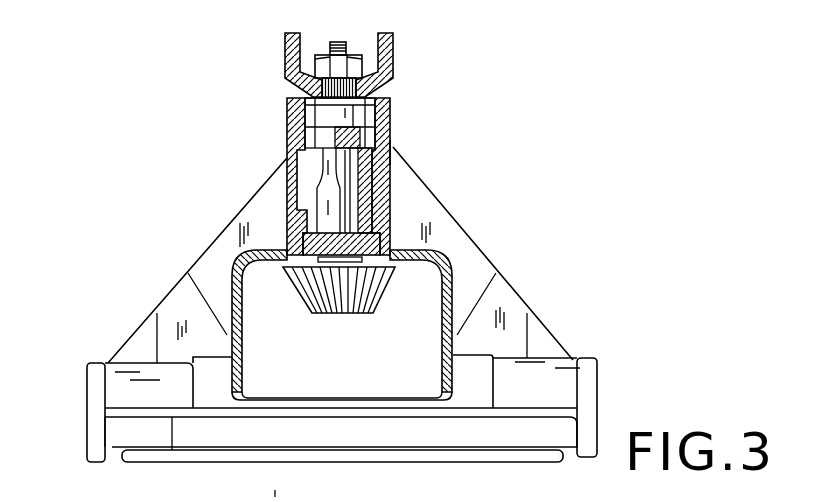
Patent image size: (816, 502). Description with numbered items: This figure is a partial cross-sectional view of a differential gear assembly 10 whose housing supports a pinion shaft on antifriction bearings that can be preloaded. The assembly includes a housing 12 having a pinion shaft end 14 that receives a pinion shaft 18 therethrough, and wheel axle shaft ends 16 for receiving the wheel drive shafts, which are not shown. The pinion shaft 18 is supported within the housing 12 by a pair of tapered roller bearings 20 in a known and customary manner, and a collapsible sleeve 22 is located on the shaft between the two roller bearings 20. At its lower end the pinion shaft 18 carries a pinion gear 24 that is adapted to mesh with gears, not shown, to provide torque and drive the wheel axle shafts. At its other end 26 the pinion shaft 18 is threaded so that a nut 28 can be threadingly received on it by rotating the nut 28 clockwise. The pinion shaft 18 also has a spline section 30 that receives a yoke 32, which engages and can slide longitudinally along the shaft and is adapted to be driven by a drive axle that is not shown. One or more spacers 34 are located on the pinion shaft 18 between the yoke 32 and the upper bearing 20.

The differential gear assembly 10 is at (462, 198).
The housing 12 is at (392, 150).
The pinion shaft end 14 is at (287, 100).
The wheel axle shaft ends 16 is at (87, 380).
The pinion shaft 18 is at (340, 216).
The tapered roller bearings 20 is at (378, 140).
The collapsible sleeve 22 is at (358, 193).
The pinion gear 24 is at (313, 288).
The other end 26 is at (340, 43).
The nut 28 is at (322, 62).
The spline section 30 is at (373, 88).
The yoke 32 is at (382, 56).
The spacers 34 is at (330, 118).